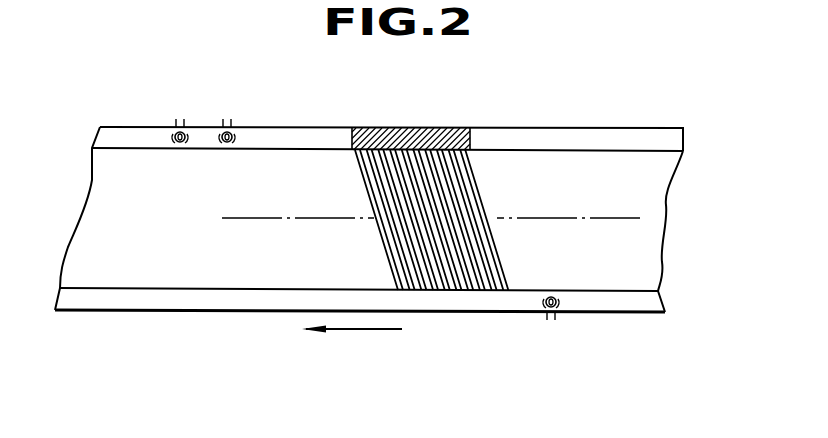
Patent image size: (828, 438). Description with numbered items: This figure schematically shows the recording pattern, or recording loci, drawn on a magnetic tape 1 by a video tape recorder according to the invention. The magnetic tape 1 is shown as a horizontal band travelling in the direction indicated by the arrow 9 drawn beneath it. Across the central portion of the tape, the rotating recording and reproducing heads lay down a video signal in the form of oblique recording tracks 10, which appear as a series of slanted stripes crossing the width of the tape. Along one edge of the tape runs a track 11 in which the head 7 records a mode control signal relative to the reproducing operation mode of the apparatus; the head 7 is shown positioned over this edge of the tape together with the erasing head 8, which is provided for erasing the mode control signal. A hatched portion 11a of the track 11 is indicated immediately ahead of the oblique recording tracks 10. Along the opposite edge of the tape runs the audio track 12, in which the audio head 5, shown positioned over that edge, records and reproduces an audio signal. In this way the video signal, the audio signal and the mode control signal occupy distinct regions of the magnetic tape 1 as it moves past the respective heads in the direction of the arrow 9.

The magnetic tape 1 is at (657, 170).
The audio head 5 is at (551, 323).
The head 7 is at (180, 120).
The erasing head 8 is at (228, 120).
The arrow 9 is at (357, 331).
The oblique recording tracks 10 is at (468, 177).
The track 11 is at (594, 137).
The hatched portion of upper strip 11a is at (426, 130).
The audio track 12 is at (641, 305).